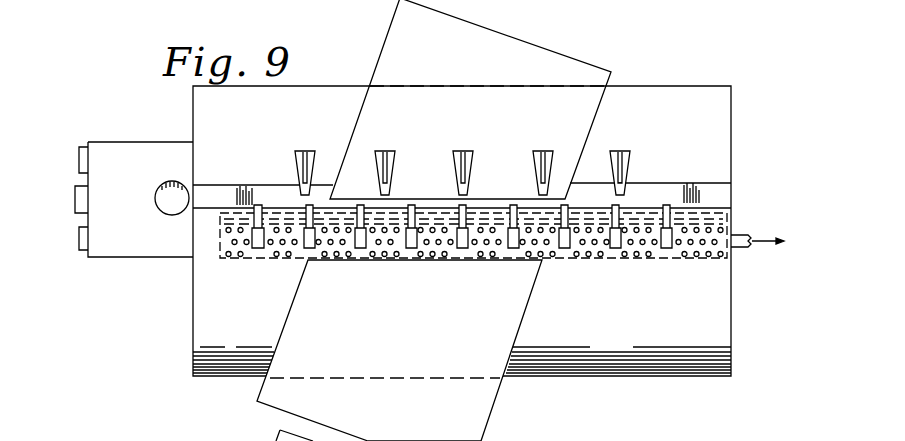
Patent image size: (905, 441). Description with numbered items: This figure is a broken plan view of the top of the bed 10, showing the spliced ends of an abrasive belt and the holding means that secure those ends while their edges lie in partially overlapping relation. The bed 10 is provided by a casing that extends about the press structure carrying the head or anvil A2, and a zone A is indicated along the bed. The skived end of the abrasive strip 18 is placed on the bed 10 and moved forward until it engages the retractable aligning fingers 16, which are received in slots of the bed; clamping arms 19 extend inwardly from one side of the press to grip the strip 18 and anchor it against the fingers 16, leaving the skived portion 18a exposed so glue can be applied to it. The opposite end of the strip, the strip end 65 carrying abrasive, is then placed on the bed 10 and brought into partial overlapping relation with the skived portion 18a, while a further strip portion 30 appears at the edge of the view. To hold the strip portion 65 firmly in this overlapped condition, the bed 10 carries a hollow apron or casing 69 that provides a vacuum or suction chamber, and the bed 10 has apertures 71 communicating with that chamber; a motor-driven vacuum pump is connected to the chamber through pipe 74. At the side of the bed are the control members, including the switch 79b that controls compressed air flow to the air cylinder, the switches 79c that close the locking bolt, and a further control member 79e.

The bed 10 is at (722, 144).
The abrasive strip 18 is at (583, 62).
The skived portion 18a is at (556, 205).
The clamping arms 19 is at (378, 160).
The retractable aligning fingers 16 is at (311, 205).
The upper plate 30 is at (307, 4).
The strip end 65 is at (489, 405).
The hollow apron or casing 69 is at (268, 262).
The apertures 71 is at (712, 254).
The pipe 74 is at (743, 235).
The zone A is at (222, 194).
The head or anvil A2 is at (142, 141).
The connector 79e is at (79, 150).
The switch 79b is at (75, 193).
The switches 79c is at (79, 236).